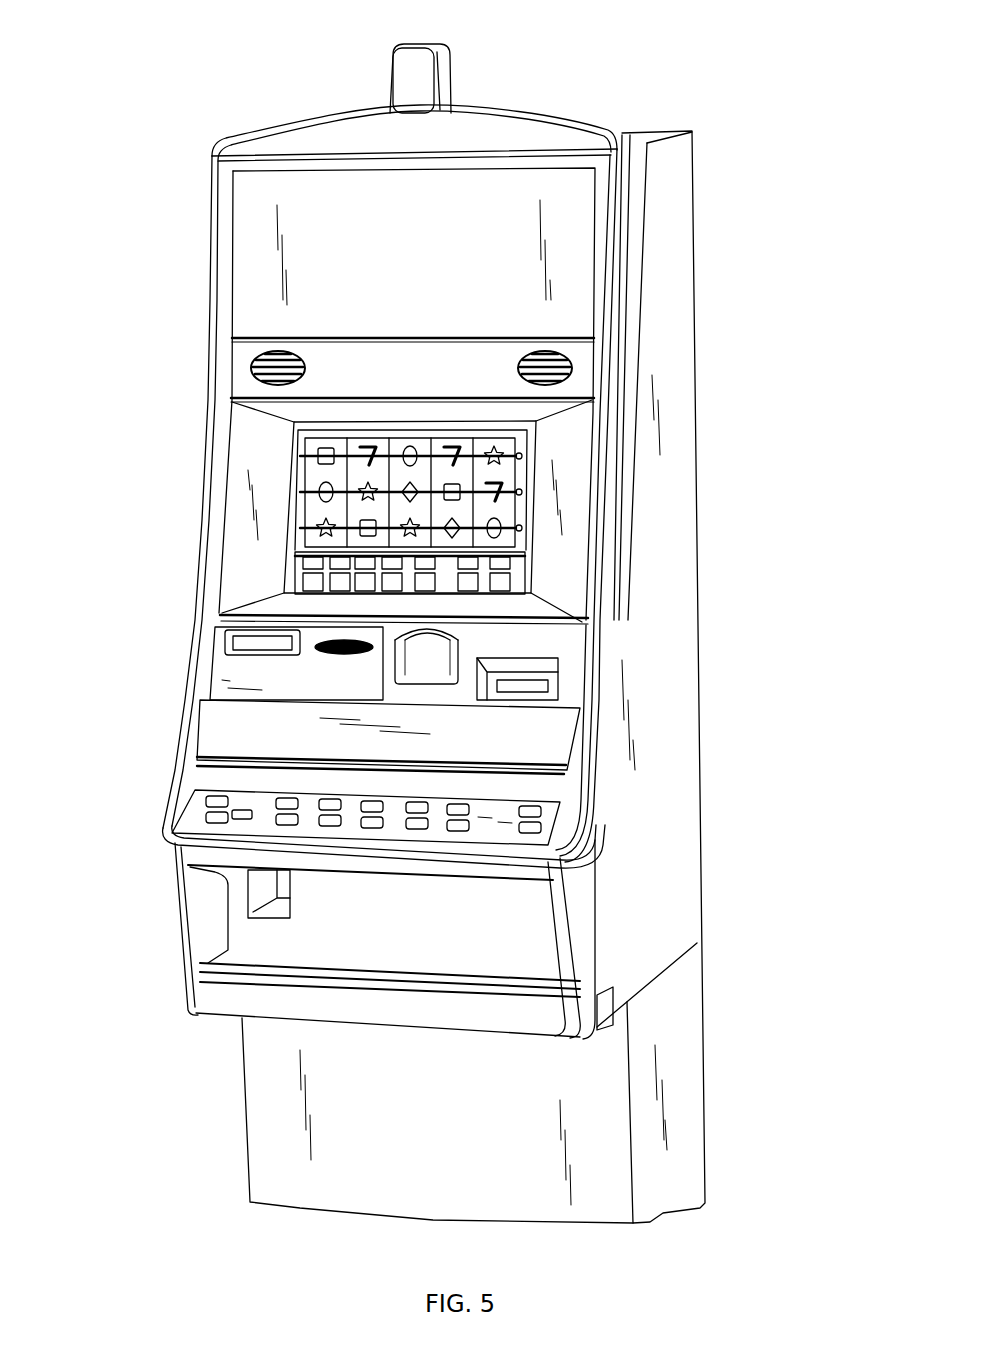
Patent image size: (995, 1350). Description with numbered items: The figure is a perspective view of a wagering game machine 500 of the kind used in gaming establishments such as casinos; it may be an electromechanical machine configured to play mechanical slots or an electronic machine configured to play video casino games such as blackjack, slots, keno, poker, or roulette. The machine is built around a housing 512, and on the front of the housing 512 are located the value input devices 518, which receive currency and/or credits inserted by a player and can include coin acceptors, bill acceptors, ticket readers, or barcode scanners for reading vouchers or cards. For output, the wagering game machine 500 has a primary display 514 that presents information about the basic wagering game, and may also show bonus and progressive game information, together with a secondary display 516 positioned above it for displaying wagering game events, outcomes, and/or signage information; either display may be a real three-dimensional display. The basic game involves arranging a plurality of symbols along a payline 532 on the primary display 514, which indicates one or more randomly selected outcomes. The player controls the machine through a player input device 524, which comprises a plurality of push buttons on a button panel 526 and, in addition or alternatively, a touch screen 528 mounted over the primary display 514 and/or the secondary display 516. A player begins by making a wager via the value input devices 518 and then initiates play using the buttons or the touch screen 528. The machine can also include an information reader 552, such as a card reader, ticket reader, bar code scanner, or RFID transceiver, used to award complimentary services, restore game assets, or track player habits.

The wagering game machine 500 is at (126, 20).
The housing 512 is at (665, 172).
The secondary display 516 is at (300, 272).
The payline 532 is at (453, 412).
The primary display 514 is at (288, 523).
The touch screen 528 is at (532, 585).
The value input devices 518 is at (560, 688).
The information reader 552 is at (333, 652).
The button panel 526 is at (268, 813).
The player input device 524 is at (578, 835).